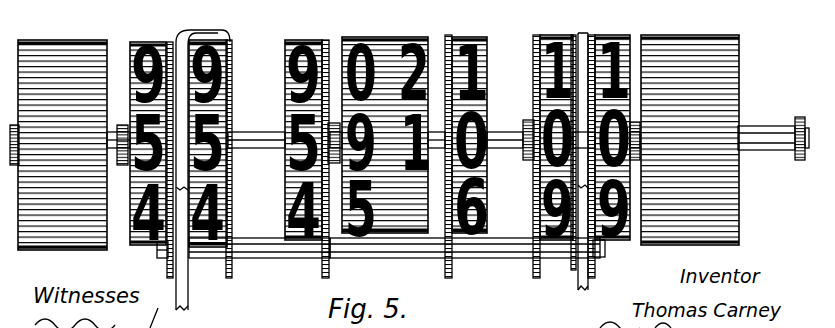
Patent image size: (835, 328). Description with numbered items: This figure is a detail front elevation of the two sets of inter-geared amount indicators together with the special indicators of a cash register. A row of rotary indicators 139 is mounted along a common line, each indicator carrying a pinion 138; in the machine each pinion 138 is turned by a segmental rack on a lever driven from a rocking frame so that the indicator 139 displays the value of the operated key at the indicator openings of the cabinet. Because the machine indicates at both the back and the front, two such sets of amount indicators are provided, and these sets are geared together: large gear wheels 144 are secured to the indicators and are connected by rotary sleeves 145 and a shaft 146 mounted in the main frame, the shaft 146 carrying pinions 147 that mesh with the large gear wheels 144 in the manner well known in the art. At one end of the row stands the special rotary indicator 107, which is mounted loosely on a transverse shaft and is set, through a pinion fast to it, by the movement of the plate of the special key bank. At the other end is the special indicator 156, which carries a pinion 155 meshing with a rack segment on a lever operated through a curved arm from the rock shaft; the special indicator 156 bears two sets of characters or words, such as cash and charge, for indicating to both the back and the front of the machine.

The special rotary indicator 107 is at (76, 29).
The large gear wheels 144 is at (226, 29).
The pinions 147 is at (165, 262).
The shaft 146 is at (212, 250).
The rotary sleeves 145 is at (428, 258).
The rotary indicator 139 is at (540, 34).
The pinion 138 is at (528, 115).
The special indicator 156 is at (700, 26).
The pinion 155 is at (796, 118).